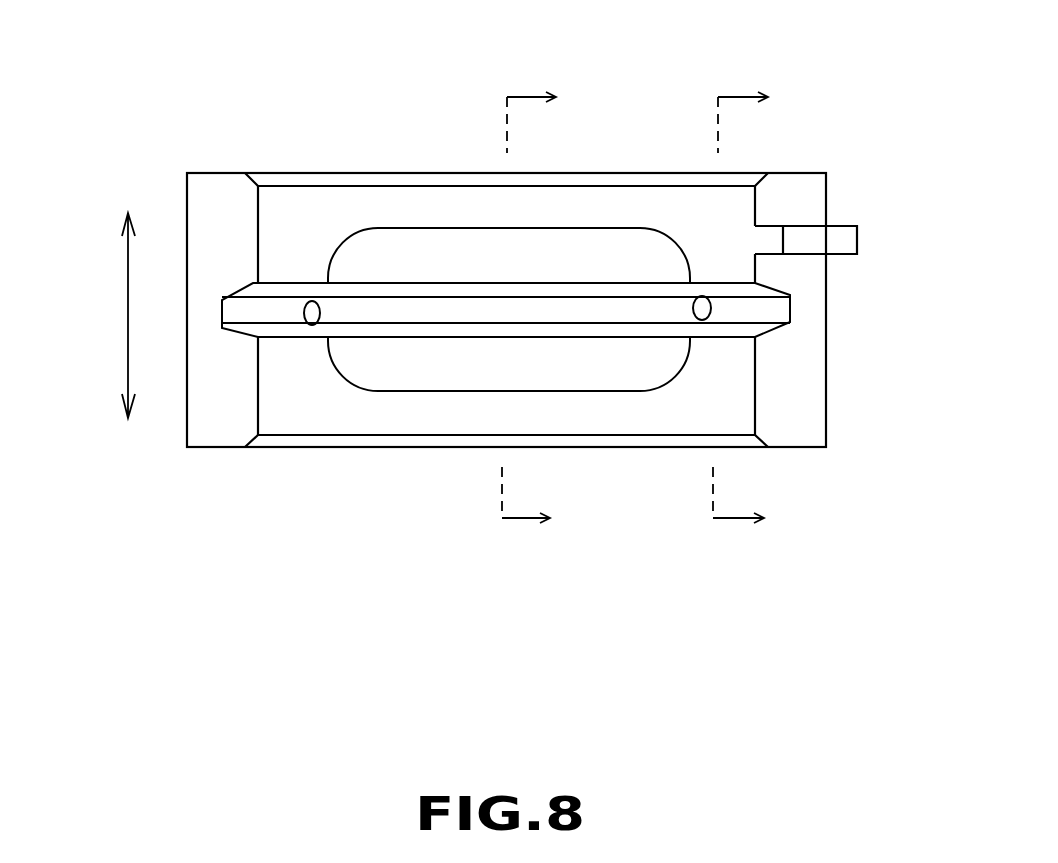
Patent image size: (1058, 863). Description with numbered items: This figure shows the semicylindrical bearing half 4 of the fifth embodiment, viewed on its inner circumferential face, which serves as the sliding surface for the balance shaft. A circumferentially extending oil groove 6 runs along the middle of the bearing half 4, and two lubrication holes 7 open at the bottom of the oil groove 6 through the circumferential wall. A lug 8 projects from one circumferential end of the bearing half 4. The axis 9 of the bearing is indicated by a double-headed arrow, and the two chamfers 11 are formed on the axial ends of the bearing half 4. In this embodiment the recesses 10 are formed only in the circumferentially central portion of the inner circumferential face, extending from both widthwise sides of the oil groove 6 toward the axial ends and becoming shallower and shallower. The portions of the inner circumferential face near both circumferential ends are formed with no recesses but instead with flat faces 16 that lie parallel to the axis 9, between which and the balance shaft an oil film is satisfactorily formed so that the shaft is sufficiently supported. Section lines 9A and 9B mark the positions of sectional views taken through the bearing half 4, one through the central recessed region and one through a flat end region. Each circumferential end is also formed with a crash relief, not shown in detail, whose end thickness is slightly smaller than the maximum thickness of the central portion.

The bearing half 4 is at (800, 172).
The oil groove 6 is at (503, 310).
The lubrication hole 7 is at (321, 313).
The lug 8 is at (858, 238).
The axis 9 is at (127, 307).
The recess 10 is at (432, 247).
The chamfer 11 is at (323, 180).
The flat face 16 is at (717, 255).
The section line 9A is at (531, 311).
The section line 9B is at (744, 311).